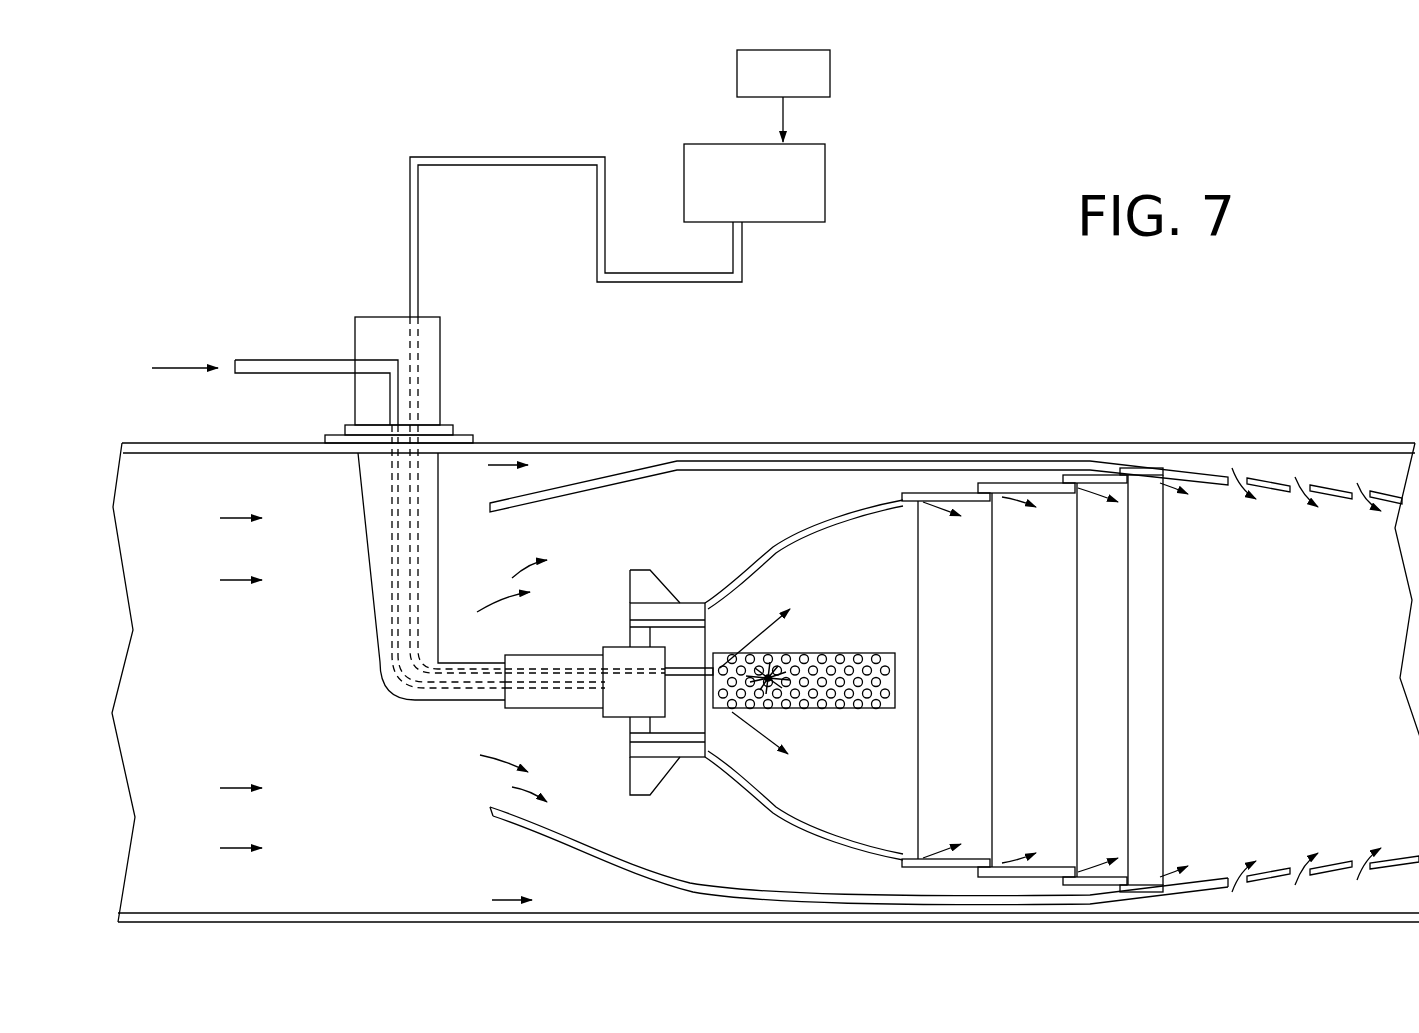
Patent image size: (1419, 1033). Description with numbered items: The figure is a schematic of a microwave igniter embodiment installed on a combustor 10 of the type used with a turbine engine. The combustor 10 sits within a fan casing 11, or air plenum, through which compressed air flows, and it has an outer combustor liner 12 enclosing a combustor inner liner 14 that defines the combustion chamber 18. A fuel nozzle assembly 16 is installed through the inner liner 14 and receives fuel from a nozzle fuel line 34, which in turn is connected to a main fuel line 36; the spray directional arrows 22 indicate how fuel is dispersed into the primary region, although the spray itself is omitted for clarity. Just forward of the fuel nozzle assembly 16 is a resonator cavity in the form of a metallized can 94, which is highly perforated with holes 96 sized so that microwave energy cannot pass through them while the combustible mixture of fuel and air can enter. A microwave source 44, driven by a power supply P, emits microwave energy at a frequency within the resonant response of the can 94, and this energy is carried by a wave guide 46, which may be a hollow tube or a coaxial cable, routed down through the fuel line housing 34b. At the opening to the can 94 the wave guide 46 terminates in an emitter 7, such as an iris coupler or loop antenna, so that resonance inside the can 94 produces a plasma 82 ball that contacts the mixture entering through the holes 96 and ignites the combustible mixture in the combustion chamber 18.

The power supply P is at (830, 75).
The microwave source 44 is at (745, 143).
The wave guide 46 is at (677, 285).
The nozzle fuel line 34 is at (277, 360).
The main fuel line 36 is at (195, 372).
The fan casing 11 is at (181, 441).
The fuel line housing 34b is at (367, 533).
The combustor 10 is at (457, 813).
The outer combustor liner 12 is at (543, 840).
The fuel nozzle assembly 16 is at (605, 646).
The microwave emitter 7 is at (718, 670).
The spray directional arrows 22 is at (768, 622).
The plasma 82 is at (772, 667).
The metallized can 94 is at (809, 676).
The holes 96 is at (858, 708).
The combustor inner liner 14 is at (845, 842).
The combustion chamber 18 is at (1115, 677).